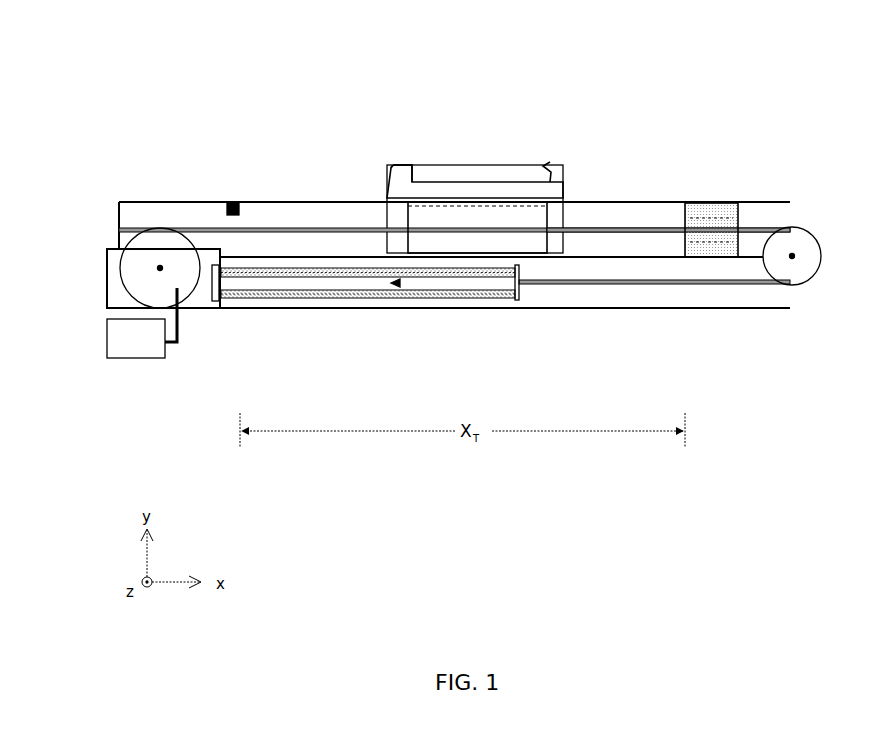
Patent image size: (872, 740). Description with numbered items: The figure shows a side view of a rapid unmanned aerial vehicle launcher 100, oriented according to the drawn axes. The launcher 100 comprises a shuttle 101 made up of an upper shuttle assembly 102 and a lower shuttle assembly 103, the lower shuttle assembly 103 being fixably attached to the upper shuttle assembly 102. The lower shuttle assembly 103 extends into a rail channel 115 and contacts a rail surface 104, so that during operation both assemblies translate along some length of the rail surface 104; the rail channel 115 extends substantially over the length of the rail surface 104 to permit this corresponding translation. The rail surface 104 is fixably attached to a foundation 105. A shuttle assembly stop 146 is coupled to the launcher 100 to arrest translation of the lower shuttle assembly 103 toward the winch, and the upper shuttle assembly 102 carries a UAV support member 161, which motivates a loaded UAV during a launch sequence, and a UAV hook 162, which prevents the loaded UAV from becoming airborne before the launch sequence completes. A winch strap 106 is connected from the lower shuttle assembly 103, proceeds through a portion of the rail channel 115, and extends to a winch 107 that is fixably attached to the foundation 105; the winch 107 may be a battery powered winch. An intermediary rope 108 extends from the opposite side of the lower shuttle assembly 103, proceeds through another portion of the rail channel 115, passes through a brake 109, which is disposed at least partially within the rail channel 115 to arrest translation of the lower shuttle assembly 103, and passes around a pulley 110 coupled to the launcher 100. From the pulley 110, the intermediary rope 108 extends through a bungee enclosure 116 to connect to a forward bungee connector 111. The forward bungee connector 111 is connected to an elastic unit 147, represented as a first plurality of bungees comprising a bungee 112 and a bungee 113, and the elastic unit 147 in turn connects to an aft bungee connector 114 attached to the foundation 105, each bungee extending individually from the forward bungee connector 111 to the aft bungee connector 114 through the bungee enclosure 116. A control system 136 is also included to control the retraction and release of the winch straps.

The launcher 100 is at (150, 70).
The shuttle 101 is at (378, 126).
The upper shuttle assembly 102 is at (385, 190).
The lower shuttle assembly 103 is at (410, 217).
The rail surface 104 is at (602, 257).
The foundation 105 is at (118, 300).
The winch strap 106 is at (322, 228).
The winch 107 is at (148, 240).
The intermediary rope 108 is at (630, 228).
The brake 109 is at (716, 204).
The pulley 110 is at (812, 262).
The forward bungee connector 111 is at (520, 284).
The bungee 112 is at (353, 272).
The bungee 113 is at (302, 290).
The aft bungee connector 114 is at (217, 282).
The rail channel 115 is at (591, 222).
The bungee enclosure 116 is at (614, 293).
The control system 136 is at (142, 323).
The shuttle assembly stop 146 is at (228, 204).
The elastic unit 147 is at (398, 283).
The UAV support member 161 is at (402, 167).
The UAV hook 162 is at (546, 163).